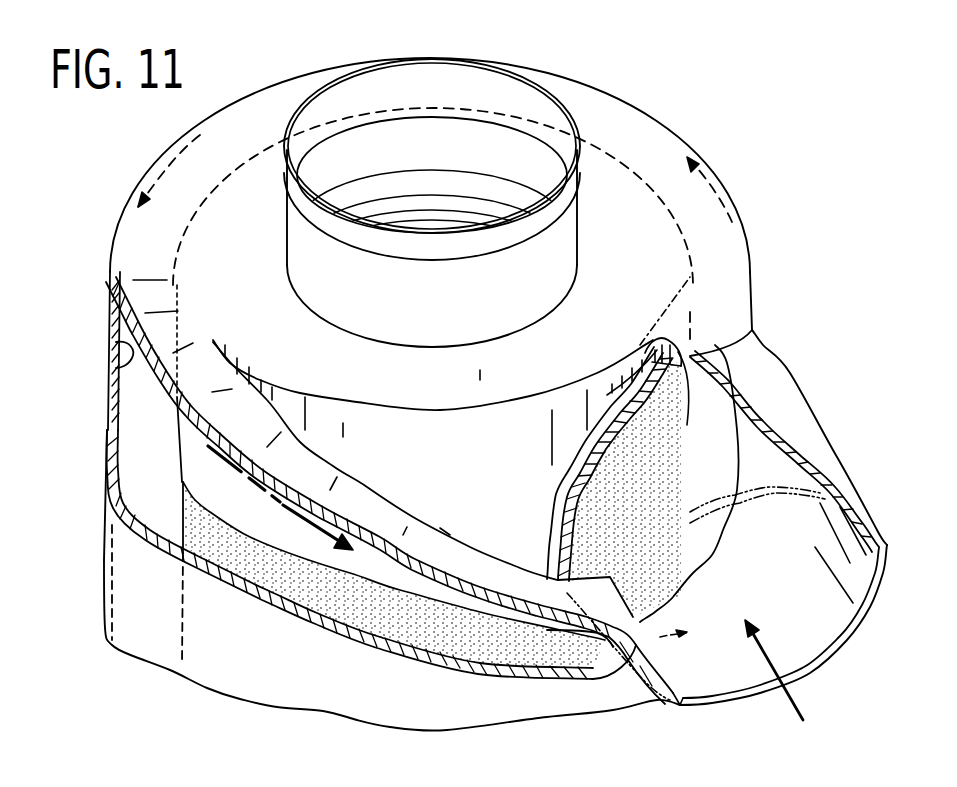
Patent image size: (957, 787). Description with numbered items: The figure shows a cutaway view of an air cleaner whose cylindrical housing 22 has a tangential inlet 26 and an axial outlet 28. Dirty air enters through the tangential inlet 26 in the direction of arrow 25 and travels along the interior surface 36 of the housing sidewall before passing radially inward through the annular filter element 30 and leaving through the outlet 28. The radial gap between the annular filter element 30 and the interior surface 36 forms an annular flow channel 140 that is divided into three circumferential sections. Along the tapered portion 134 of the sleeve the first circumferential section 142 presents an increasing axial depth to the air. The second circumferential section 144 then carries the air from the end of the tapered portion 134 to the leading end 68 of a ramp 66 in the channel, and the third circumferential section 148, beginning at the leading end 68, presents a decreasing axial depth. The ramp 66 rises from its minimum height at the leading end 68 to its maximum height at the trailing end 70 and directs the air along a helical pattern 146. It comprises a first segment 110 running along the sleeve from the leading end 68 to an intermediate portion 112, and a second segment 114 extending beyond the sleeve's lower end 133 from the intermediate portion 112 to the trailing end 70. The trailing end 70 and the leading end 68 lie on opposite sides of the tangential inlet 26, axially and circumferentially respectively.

The cylindrical housing 22 is at (103, 437).
The arrow 25 is at (800, 703).
The tangential inlet 26 is at (835, 625).
The outlet 28 is at (492, 83).
The annular filter element 30 is at (197, 538).
The interior surface 36 is at (112, 347).
The ramp 66 is at (362, 490).
The leading end 68 is at (208, 365).
The trailing end 70 is at (597, 633).
The first segment 110 is at (309, 462).
The intermediate portion 112 is at (463, 553).
The second segment 114 is at (527, 580).
The lower end 133 is at (395, 585).
The tapered portion 134 is at (706, 364).
The annular flow channel 140 is at (710, 448).
The first circumferential section 142 is at (703, 397).
The second circumferential section 144 is at (583, 95).
The helical pattern 146 is at (293, 517).
The third circumferential section 148 is at (190, 450).